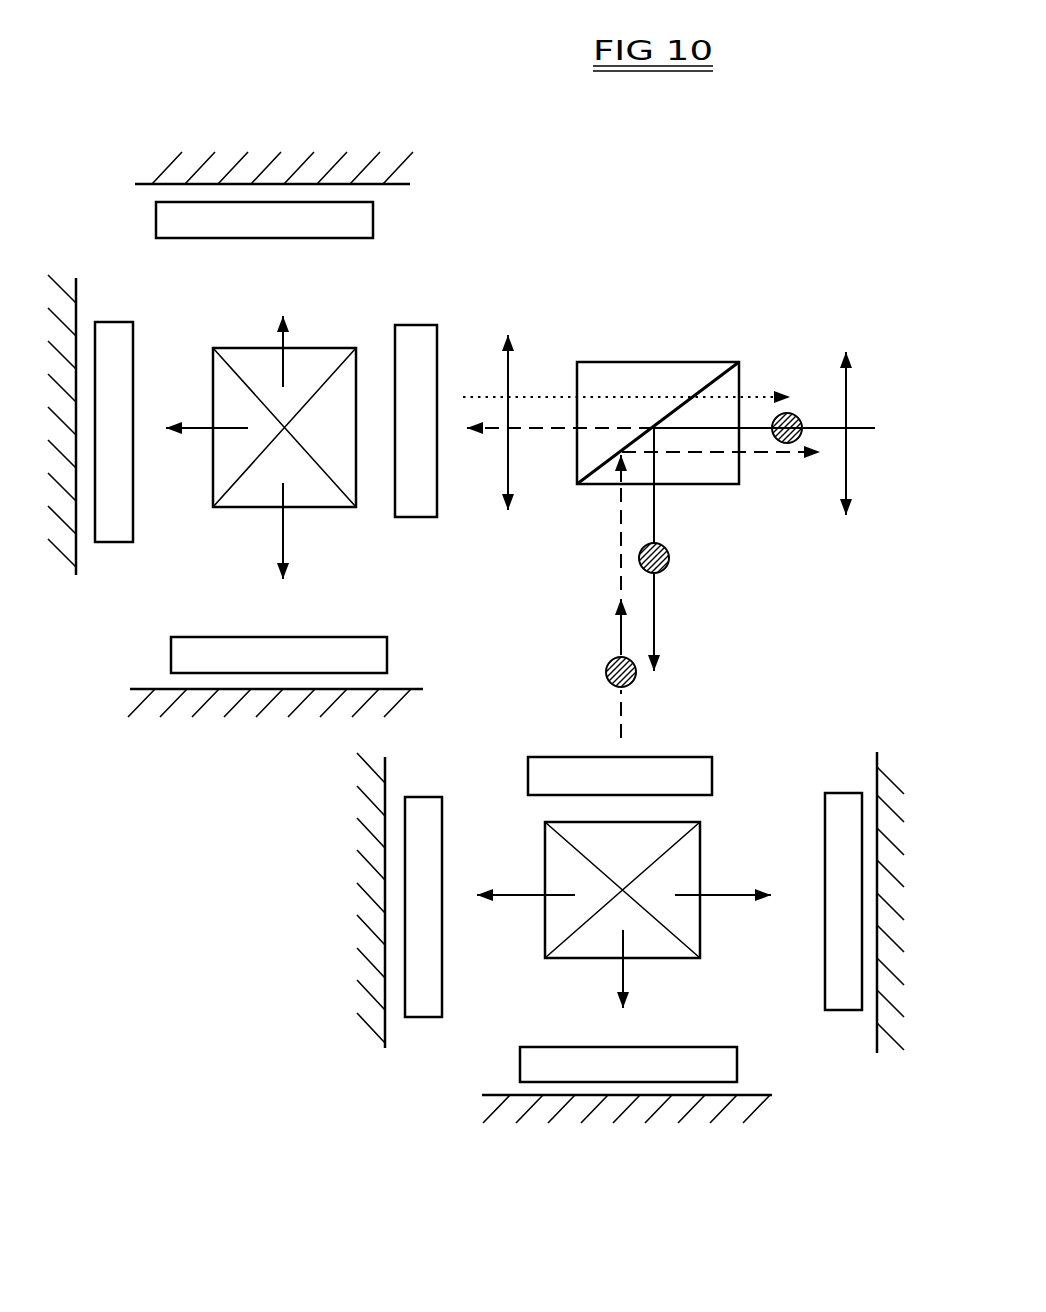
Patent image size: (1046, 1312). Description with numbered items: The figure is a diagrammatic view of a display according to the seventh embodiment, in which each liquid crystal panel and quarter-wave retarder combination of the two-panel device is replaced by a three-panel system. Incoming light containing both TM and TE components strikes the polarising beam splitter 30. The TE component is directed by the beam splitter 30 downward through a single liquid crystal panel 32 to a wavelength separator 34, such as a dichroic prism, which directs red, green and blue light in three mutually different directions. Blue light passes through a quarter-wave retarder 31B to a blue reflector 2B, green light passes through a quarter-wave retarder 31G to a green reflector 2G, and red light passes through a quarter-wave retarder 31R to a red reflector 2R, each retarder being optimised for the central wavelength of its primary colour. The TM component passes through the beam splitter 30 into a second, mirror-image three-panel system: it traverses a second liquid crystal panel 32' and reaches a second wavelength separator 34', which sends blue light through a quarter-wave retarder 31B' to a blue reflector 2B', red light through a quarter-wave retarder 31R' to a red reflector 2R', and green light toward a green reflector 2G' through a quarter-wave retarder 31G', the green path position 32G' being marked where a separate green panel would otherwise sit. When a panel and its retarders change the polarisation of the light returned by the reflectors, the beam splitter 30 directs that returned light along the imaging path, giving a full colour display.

The blue reflector 2B' is at (312, 141).
The λ/4 retarder for blue light 31B' is at (328, 218).
The green reflector 2G' is at (84, 386).
The λ/4 retarder for green light 31G' is at (121, 465).
The liquid crystal panel position for green light 32G' is at (197, 581).
The second wavelength separator 34' is at (250, 421).
The second liquid crystal panel 32' is at (417, 381).
The polarising beam splitter 30 is at (740, 377).
The λ/4 retarder for red light 31R' is at (330, 641).
The red reflector 2R' is at (241, 697).
The blue reflector 2B is at (336, 886).
The λ/4 retarder for blue light 31B is at (456, 882).
The liquid crystal panel 32 is at (623, 750).
The λ/4 retarder for red light 31R is at (822, 831).
The red reflector 2R is at (872, 869).
The wavelength separator 34 is at (622, 908).
The λ/4 retarder for green light 31G is at (611, 1030).
The green reflector 2G is at (640, 1071).